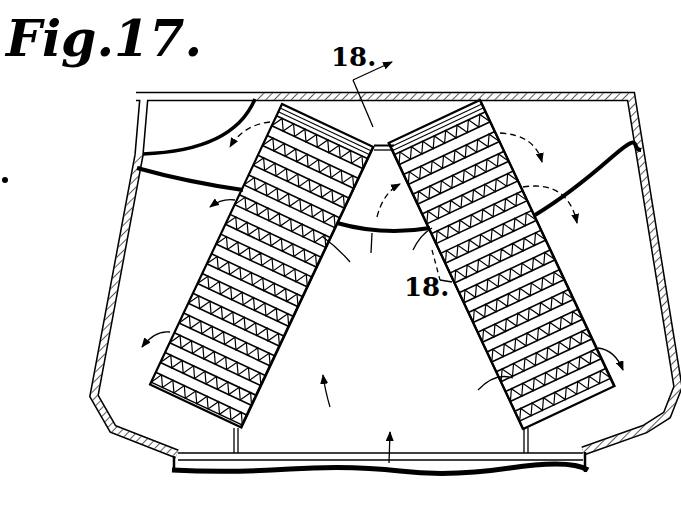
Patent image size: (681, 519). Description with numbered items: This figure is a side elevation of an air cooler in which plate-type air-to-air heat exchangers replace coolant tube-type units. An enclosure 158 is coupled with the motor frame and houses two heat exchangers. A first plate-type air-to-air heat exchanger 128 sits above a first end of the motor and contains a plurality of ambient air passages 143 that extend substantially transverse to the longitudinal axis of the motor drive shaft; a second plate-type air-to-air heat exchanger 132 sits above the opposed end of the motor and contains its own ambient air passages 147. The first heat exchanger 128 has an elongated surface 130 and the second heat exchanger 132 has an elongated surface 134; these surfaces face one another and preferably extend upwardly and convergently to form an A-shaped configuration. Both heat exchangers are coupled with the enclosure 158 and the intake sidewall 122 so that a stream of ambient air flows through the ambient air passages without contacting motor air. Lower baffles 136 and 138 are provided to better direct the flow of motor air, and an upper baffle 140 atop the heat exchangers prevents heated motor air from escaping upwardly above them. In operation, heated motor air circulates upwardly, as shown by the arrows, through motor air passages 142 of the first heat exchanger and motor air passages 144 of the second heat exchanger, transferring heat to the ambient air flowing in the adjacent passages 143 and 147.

The intake sidewall 122 is at (262, 107).
The first plate-type air-to-air heat exchanger 128 is at (258, 160).
The elongated surface 130 is at (306, 288).
The second plate-type air-to-air heat exchanger 132 is at (490, 110).
The elongated surface 134 is at (468, 306).
The lower baffle 136 is at (243, 443).
The lower baffle 138 is at (523, 437).
The upper baffle 140 is at (388, 140).
The motor air passages 142 is at (288, 343).
The ambient air passages 143 is at (233, 220).
The motor air passages 144 is at (547, 240).
The ambient air passages 147 is at (483, 332).
The enclosure 158 is at (597, 97).